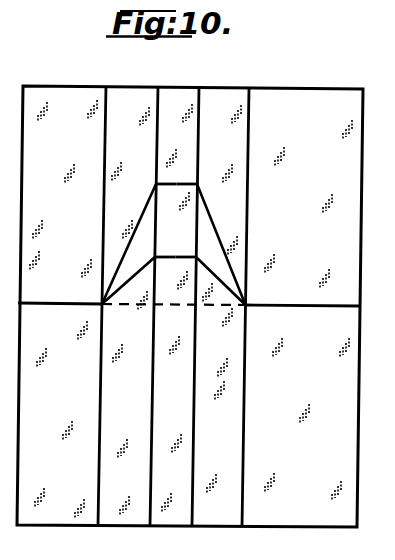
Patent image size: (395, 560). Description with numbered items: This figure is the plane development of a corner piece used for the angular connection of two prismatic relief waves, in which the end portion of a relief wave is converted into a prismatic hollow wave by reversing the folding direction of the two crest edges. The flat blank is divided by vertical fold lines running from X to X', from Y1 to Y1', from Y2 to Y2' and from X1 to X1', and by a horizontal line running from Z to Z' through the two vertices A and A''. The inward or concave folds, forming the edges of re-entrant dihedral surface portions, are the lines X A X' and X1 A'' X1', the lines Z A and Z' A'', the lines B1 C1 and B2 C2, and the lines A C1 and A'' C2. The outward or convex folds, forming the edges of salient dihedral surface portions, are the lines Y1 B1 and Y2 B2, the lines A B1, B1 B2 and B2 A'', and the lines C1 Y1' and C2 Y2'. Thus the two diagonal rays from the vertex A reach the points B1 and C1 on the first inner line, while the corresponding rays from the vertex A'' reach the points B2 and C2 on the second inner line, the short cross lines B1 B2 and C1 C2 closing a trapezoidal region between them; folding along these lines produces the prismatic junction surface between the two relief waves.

The fold line end point X is at (109, 181).
The fold line end point X' is at (103, 431).
The fold line end point Y1 is at (163, 181).
The fold line end point Y1' is at (156, 432).
The fold line end point Y2 is at (206, 181).
The fold line end point Y2' is at (198, 432).
The fold line end point X1 is at (259, 181).
The fold line end point X1' is at (249, 432).
The fold line end point Z is at (60, 288).
The fold line end point Z' is at (303, 292).
The fold vertex A is at (164, 244).
The fold vertex A'' is at (237, 245).
The fold vertex B1 is at (152, 179).
The fold vertex B2 is at (204, 179).
The fold vertex C1 is at (154, 252).
The fold vertex C2 is at (201, 252).